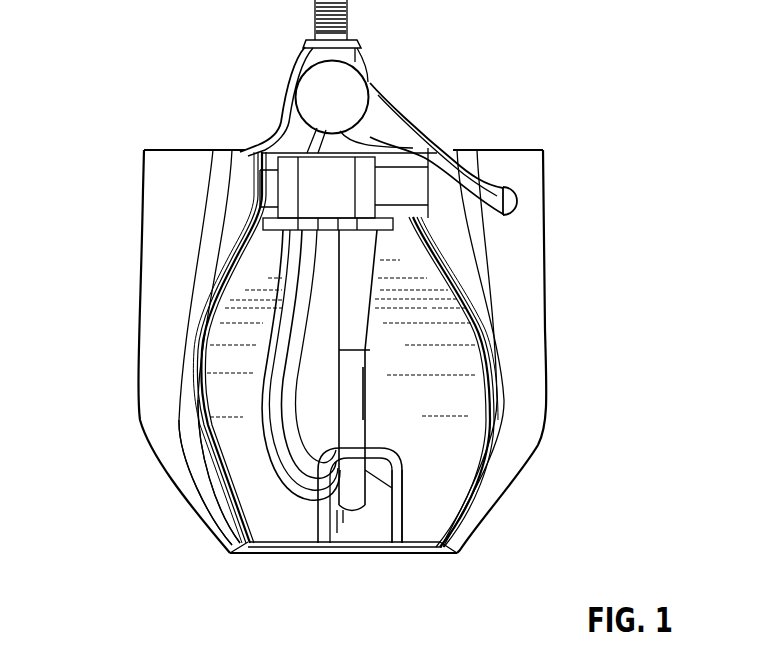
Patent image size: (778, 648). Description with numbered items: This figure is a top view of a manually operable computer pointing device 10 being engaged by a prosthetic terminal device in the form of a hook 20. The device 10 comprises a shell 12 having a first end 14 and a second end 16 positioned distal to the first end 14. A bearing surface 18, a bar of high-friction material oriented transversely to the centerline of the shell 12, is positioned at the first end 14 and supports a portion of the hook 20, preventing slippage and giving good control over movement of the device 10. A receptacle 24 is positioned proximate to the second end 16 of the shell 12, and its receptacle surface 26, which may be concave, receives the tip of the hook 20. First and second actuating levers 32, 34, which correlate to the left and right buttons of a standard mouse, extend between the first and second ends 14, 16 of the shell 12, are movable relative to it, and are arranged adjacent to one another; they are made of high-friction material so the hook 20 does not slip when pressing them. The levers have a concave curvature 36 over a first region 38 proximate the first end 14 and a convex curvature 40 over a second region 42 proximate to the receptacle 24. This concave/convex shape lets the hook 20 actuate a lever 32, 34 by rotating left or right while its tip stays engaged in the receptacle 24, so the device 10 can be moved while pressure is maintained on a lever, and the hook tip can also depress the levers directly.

The pointing device 10 is at (510, 26).
The shell 12 is at (527, 335).
The first end 14 is at (237, 147).
The second end 16 is at (287, 555).
The bearing surface 18 is at (410, 183).
The hook 20 is at (277, 308).
The receptacle 24 is at (375, 525).
The receptacle surface 26 is at (375, 525).
The first actuating lever 32 is at (225, 403).
The second actuating lever 34 is at (450, 343).
The concave curvature 36 is at (215, 340).
The first region 38 is at (215, 340).
The convex curvature 40 is at (240, 450).
The second region 42 is at (240, 450).